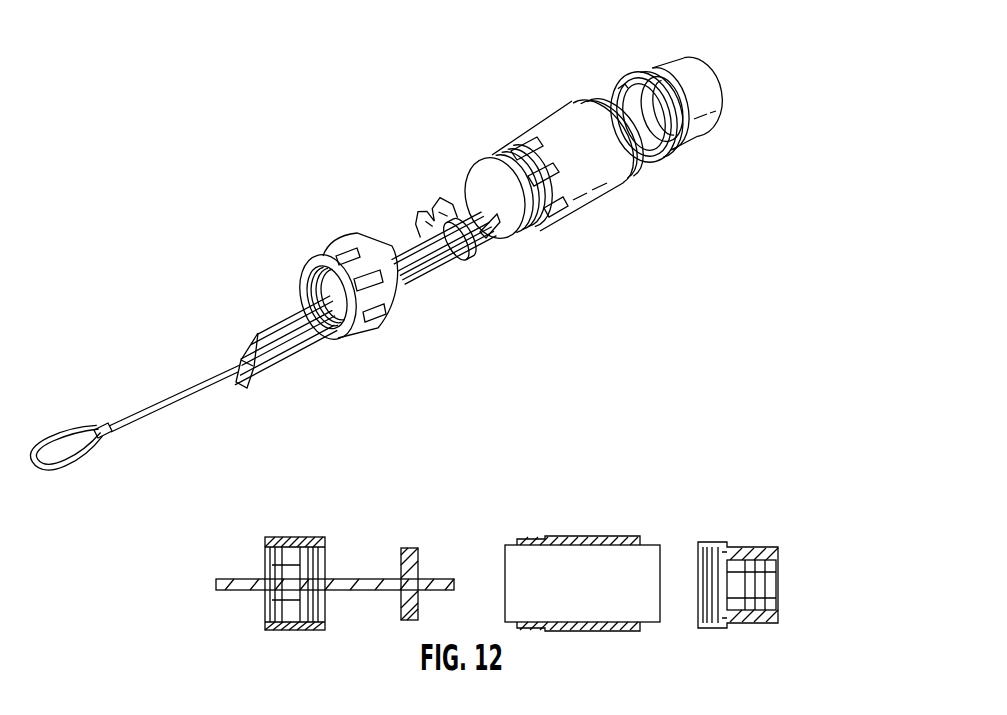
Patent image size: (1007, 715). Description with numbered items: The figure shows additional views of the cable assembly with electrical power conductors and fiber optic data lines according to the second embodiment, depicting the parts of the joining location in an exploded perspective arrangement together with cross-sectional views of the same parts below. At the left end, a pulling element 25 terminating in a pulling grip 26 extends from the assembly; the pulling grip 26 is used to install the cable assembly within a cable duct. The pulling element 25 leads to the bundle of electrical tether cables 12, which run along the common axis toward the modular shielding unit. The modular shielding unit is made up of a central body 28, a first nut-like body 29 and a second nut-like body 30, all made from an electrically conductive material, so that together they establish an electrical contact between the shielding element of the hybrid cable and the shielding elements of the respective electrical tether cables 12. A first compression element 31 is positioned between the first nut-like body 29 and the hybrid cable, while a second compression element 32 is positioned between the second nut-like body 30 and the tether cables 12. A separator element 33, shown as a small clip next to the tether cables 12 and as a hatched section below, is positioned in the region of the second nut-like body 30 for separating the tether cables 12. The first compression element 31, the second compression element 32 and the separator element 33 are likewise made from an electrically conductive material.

The electrical tether cable 12 is at (258, 347).
The pulling element 25 is at (170, 390).
The pulling grip 26 is at (73, 440).
The central body 28 is at (577, 222).
The first nut-like body 29 is at (688, 140).
The second nut-like body 30 is at (362, 332).
The first compression element 31 is at (614, 90).
The second compression element 32 is at (300, 272).
The separator element 33 is at (436, 264).